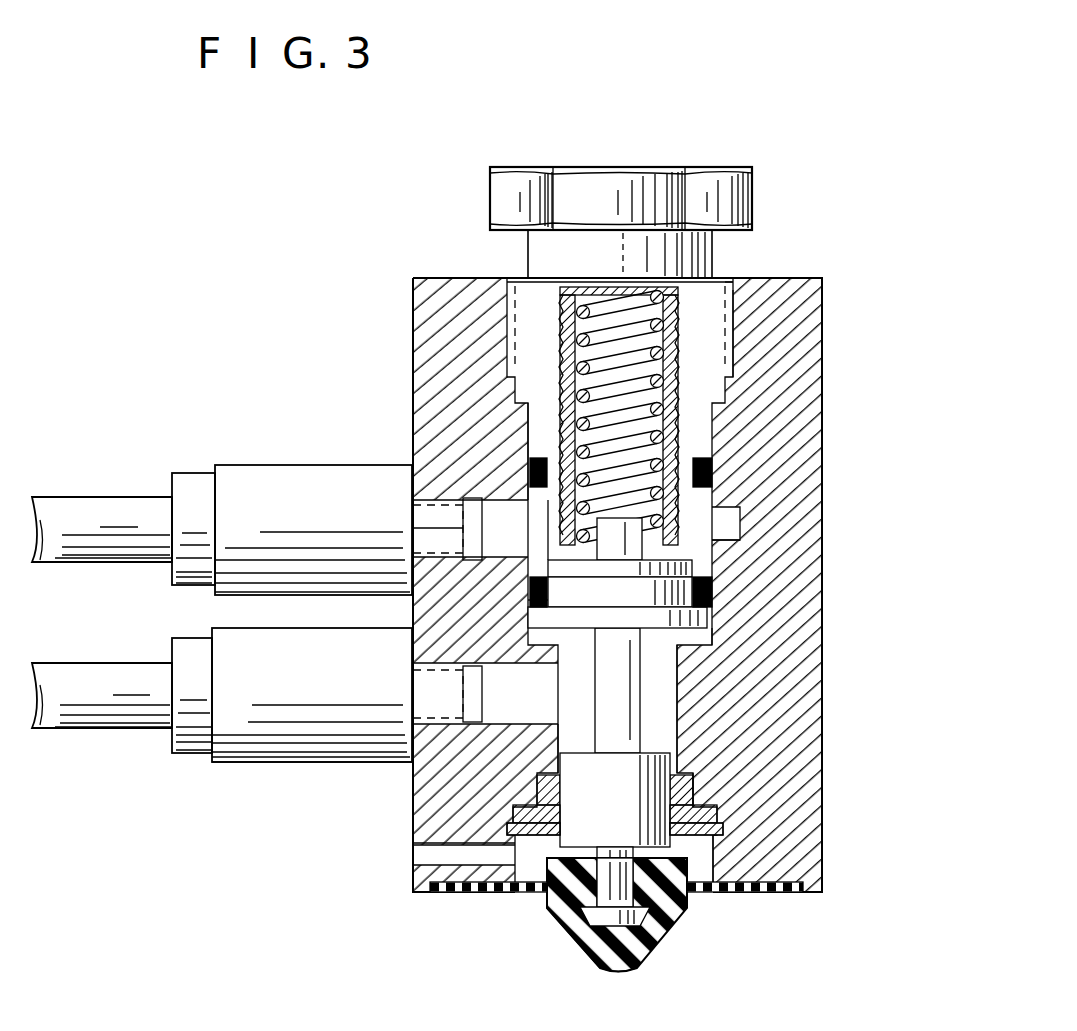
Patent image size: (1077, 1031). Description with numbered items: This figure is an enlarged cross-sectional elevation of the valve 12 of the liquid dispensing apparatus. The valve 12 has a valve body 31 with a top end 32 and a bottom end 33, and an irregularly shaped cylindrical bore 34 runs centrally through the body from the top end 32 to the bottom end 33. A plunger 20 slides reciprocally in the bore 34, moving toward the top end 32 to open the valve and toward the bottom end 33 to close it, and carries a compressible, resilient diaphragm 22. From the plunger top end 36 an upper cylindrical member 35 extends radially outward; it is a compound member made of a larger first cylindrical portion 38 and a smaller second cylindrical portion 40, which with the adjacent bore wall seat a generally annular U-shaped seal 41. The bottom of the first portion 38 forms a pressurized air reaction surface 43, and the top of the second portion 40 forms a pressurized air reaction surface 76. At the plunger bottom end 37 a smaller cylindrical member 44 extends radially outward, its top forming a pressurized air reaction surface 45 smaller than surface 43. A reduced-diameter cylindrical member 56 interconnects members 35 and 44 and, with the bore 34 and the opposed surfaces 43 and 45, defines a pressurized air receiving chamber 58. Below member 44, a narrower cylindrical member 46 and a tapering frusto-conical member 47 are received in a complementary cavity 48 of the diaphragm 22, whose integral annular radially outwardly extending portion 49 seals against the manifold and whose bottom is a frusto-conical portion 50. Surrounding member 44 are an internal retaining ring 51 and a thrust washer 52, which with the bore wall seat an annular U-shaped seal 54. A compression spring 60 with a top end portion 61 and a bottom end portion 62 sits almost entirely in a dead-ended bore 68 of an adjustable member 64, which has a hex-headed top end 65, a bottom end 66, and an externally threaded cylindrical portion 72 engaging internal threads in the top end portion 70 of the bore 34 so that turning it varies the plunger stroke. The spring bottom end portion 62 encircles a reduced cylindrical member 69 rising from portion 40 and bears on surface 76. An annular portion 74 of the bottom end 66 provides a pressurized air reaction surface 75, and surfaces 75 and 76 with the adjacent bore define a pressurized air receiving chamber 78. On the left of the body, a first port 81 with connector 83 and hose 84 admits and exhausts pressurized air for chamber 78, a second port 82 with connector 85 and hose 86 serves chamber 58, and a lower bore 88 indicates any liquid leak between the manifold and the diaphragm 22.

The valve 12 is at (830, 430).
The plunger 20 is at (652, 693).
The diaphragm 22 is at (708, 905).
The valve body 31 is at (828, 281).
The top end 32 is at (432, 278).
The bottom end 33 is at (413, 885).
The bore 34 is at (715, 538).
The upper cylindrical member 35 is at (412, 648).
The top end 36 is at (712, 590).
The bottom end 37 is at (805, 887).
The first cylindrical portion 38 is at (712, 625).
The second cylindrical portion 40 is at (412, 620).
The seal 41 is at (712, 610).
The pressurized air reaction surface 43 is at (740, 640).
The cylindrical member 44 is at (714, 560).
The pressurized air reaction surface 45 is at (675, 762).
The cylindrical member 46 is at (575, 920).
The frusto-conical member 47 is at (605, 972).
The cavity 48 is at (672, 930).
The annular radially outwardly extending portion 49 is at (480, 895).
The frusto-conical portion 50 is at (625, 972).
The internal retaining ring 51 is at (723, 830).
The thrust washer 52 is at (717, 815).
The annular seal 54 is at (695, 788).
The cylindrical member 56 is at (680, 745).
The pressurized air receiving chamber 58 is at (573, 737).
The compression spring 60 is at (681, 396).
The top end portion 61 is at (632, 327).
The bottom end portion 62 is at (556, 525).
The adjustable member 64 is at (768, 163).
The hex-headed top end 65 is at (630, 167).
The bottom end 66 is at (420, 530).
The dead-ended bore 68 is at (705, 468).
The cylindrical member 69 is at (522, 466).
The top end portion 70 is at (745, 283).
The cylindrical portion 72 is at (745, 306).
The annular portion 74 is at (470, 500).
The pressurized air reaction surface 75 is at (478, 548).
The pressurized air reaction surface 76 is at (568, 597).
The pressurized air receiving chamber 78 is at (738, 520).
The first port 81 is at (408, 520).
The second port 82 is at (412, 725).
The connector 83 is at (233, 464).
The tube or hose 84 is at (90, 496).
The connector 85 is at (245, 764).
The tube or hose 86 is at (122, 730).
The bore 88 is at (420, 858).